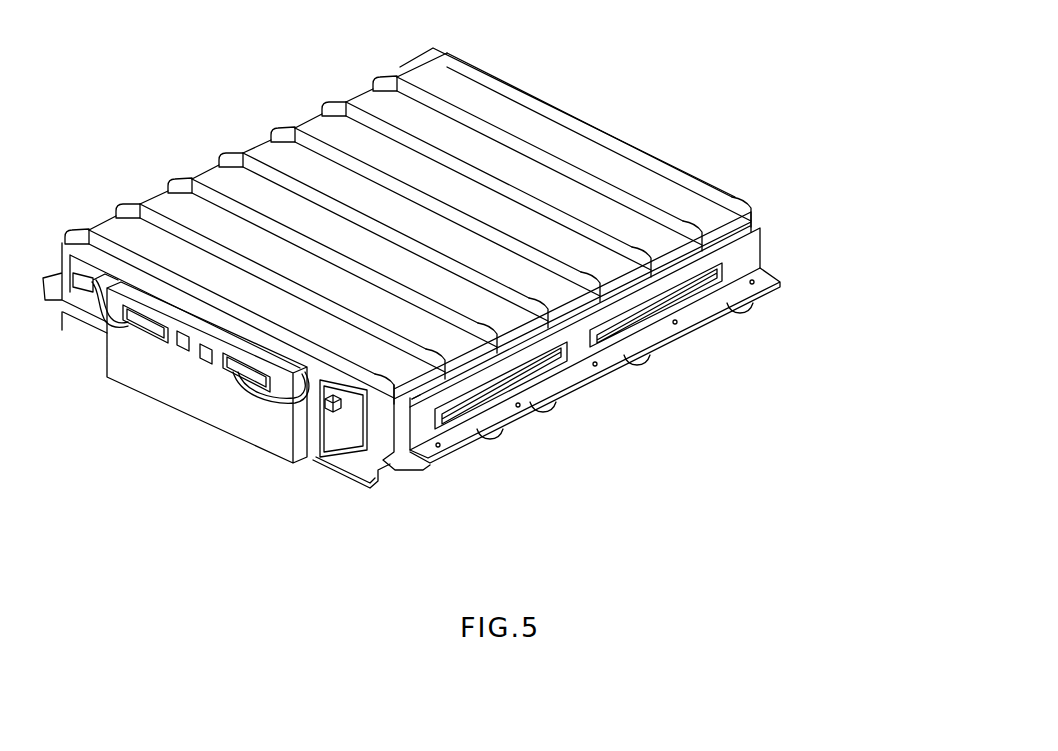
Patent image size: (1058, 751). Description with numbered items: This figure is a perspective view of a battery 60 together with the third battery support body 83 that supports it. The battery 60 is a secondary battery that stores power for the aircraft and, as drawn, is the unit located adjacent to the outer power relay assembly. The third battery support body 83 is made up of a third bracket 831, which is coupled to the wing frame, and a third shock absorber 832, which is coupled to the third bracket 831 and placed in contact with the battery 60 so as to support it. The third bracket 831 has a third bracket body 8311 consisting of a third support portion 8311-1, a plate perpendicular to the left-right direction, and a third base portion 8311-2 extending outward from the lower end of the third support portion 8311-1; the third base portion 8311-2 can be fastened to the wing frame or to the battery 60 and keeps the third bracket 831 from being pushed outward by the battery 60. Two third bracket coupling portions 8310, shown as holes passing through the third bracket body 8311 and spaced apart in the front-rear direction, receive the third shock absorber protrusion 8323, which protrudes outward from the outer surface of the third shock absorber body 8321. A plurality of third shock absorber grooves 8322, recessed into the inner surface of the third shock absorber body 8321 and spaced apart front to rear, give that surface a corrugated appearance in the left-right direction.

The battery 60 is at (616, 98).
The third battery support body 83 is at (780, 242).
The third bracket 831 is at (782, 264).
The third shock absorber 832 is at (746, 216).
The third bracket coupling portion 8310 is at (722, 268).
The third bracket body 8311 is at (920, 358).
The third support portion 8311-1 is at (777, 288).
The third base portion 8311-2 is at (640, 350).
The third shock absorber body 8321 is at (566, 326).
The third shock absorber grooves 8322 is at (492, 362).
The third shock absorber protrusion 8323 is at (507, 385).